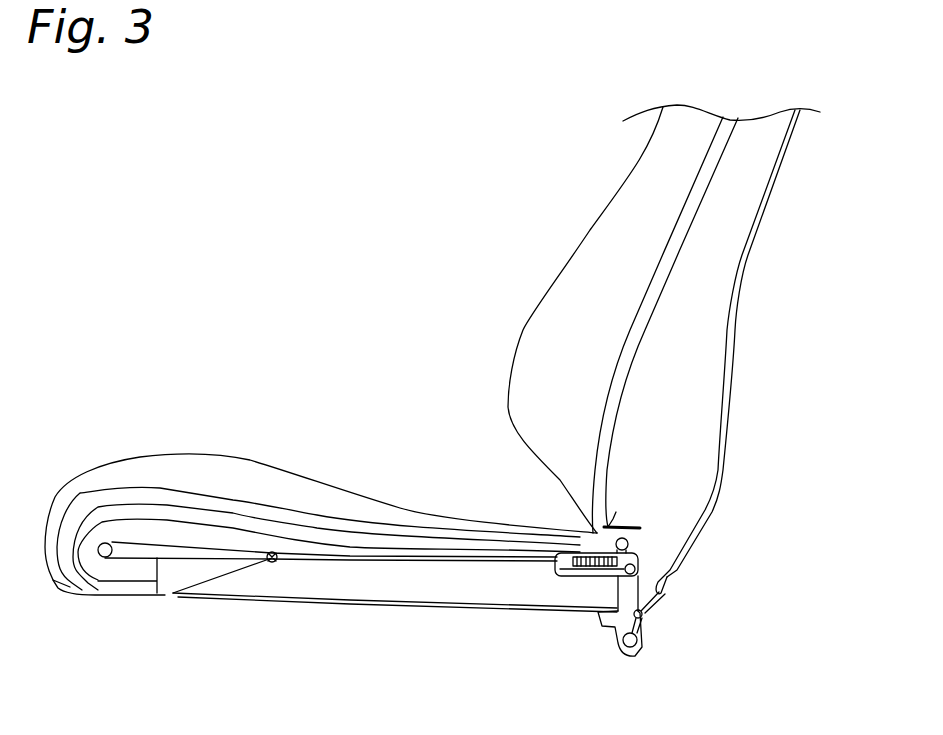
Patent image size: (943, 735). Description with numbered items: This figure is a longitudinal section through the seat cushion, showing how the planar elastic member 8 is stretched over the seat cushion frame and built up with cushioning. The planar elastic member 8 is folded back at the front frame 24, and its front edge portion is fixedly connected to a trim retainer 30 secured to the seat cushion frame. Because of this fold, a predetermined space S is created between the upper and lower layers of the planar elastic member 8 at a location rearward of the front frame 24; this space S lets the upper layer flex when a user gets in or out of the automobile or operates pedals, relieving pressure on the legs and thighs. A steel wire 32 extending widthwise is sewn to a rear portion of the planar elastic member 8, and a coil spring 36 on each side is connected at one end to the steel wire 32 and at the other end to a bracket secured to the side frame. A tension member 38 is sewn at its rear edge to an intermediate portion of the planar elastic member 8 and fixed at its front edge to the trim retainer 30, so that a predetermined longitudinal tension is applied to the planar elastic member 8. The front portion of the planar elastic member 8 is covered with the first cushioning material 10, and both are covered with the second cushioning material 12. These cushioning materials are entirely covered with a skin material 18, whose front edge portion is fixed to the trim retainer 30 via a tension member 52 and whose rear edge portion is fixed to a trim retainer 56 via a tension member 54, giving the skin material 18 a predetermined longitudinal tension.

The space S is at (132, 552).
The planar elastic member 8 is at (200, 547).
The first cushioning material 10 is at (178, 536).
The second cushioning material 12 is at (153, 515).
The skin material 18 is at (130, 497).
The front frame 24 is at (103, 557).
The trim retainer 30 is at (275, 561).
The steel wire 32 is at (560, 567).
The coil spring 36 is at (598, 550).
The tension member 38 is at (313, 557).
The tension member 52 is at (165, 597).
The tension member 54 is at (615, 515).
The trim retainer 56 is at (628, 546).